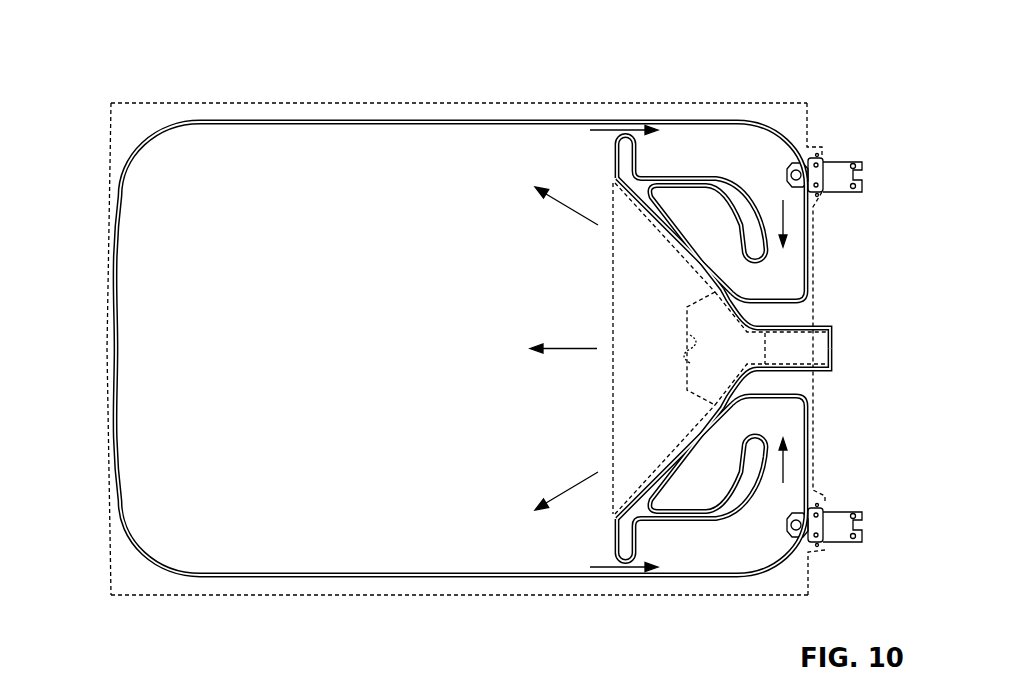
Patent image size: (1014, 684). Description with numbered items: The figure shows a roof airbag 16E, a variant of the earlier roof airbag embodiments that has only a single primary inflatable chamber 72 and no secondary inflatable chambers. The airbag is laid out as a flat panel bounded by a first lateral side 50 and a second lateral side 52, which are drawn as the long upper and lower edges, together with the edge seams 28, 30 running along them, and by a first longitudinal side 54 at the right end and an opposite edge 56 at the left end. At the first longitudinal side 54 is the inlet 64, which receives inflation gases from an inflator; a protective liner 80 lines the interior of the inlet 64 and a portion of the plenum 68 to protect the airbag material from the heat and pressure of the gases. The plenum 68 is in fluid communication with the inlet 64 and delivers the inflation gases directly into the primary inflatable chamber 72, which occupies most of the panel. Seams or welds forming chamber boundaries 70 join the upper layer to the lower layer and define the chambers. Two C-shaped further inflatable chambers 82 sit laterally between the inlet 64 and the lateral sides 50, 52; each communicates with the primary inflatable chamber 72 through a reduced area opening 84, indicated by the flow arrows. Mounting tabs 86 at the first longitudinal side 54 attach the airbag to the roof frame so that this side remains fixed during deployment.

The roof airbag 16E is at (551, 80).
The upper edge 28 is at (321, 120).
The lower edge 30 is at (428, 597).
The first lateral side 50 is at (232, 102).
The second lateral side 52 is at (312, 597).
The first longitudinal side 54 is at (817, 246).
The front edge 56 is at (106, 377).
The inlet 64 is at (820, 323).
The plenum 68 is at (608, 292).
The chamber boundaries 70 is at (758, 431).
The primary inflatable chamber 72 is at (300, 350).
The protective liner 80 is at (833, 348).
The further inflatable chamber 82 is at (712, 163).
The reduced area opening 84 is at (617, 123).
The mounting tab 86 is at (833, 163).